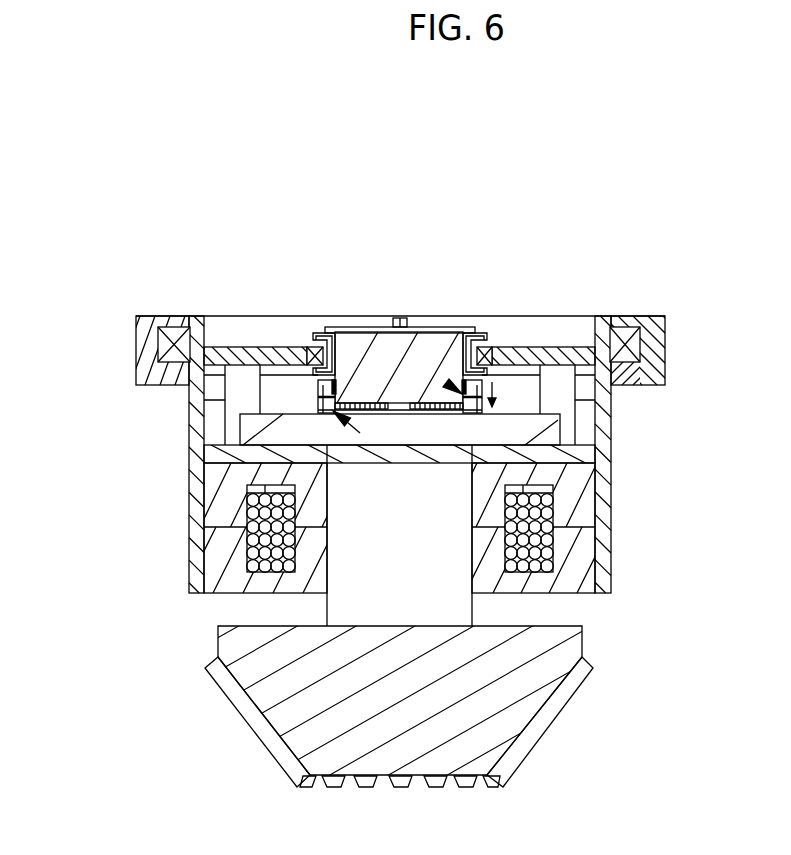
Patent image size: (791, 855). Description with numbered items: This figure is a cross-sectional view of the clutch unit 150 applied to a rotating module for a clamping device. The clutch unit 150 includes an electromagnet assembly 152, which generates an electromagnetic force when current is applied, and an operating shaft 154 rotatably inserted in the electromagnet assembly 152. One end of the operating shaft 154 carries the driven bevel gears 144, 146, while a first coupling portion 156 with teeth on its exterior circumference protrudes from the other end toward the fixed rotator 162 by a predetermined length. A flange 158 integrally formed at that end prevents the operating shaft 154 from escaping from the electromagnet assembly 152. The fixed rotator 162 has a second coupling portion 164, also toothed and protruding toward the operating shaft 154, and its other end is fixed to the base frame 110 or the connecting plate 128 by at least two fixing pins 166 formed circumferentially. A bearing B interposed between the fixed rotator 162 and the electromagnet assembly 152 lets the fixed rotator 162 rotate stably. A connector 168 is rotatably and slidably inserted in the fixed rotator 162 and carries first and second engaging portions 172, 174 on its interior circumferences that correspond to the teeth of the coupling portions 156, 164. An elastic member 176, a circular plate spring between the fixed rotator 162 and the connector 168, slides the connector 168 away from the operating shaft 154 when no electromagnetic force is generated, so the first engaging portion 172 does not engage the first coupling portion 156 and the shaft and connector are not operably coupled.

The base frame 110 is at (423, 407).
The connecting plate 128 is at (575, 328).
The clutch unit 150 is at (393, 523).
The electromagnet assembly 152 is at (212, 557).
The operating shaft 154 is at (342, 608).
The first coupling portion 156 is at (258, 478).
The flange 158 is at (258, 424).
The fixed rotator 162 is at (332, 325).
The second coupling portion 164 is at (300, 318).
The fixing pin 166 is at (402, 318).
The connector 168 is at (400, 354).
The first engaging portion 172 is at (367, 436).
The second engaging portion 174 is at (445, 385).
The elastic member 176 is at (482, 333).
The bearing B is at (500, 350).
The driven bevel gear 144 is at (425, 609).
The driven bevel gear 146 is at (477, 712).